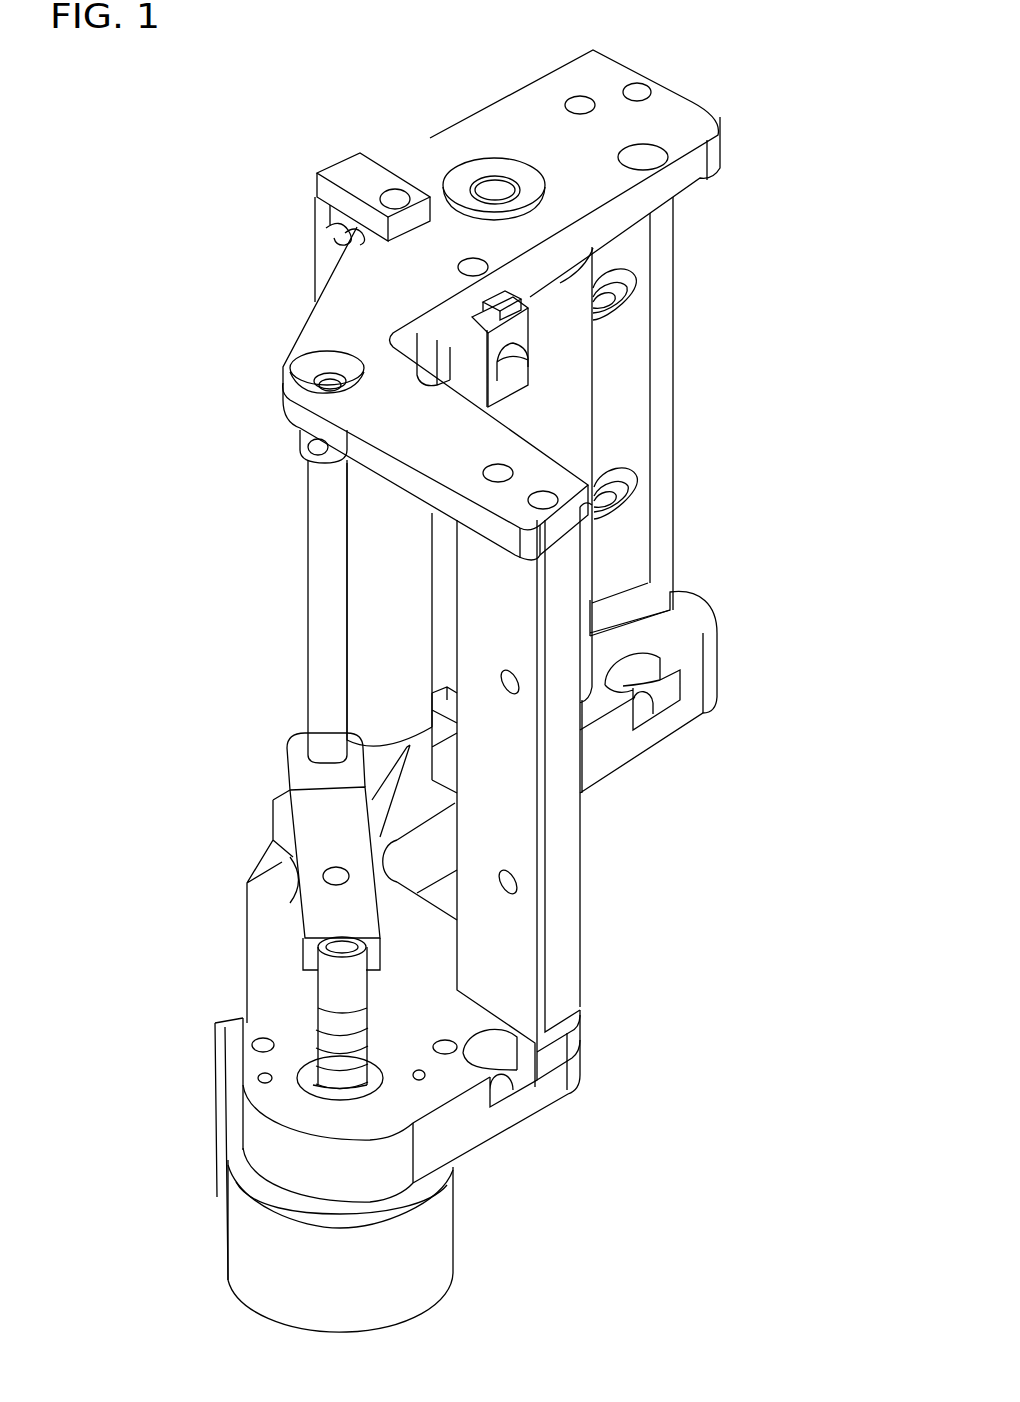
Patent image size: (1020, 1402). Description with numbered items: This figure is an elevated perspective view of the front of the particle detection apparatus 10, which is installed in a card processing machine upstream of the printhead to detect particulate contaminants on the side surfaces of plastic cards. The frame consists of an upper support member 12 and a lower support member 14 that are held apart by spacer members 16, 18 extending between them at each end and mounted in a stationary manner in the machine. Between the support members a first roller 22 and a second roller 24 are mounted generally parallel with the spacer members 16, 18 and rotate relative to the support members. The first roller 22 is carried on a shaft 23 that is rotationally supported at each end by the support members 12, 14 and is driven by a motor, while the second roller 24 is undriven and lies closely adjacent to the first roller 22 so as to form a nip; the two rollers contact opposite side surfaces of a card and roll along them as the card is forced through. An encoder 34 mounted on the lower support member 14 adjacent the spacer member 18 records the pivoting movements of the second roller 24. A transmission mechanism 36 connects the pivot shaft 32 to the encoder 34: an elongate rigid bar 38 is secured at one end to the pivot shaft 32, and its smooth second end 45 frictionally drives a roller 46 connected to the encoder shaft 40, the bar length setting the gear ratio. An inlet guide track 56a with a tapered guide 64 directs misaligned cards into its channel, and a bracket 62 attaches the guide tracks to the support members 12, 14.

The particle detection apparatus 10 is at (210, 312).
The upper support member 12 is at (670, 108).
The lower support member 14 is at (682, 628).
The spacer member 16 is at (630, 390).
The spacer member 18 is at (560, 830).
The first roller 22 is at (577, 285).
The shaft 23 is at (495, 195).
The second roller 24 is at (367, 490).
The pivot shaft 32 is at (323, 582).
The encoder 34 is at (262, 1253).
The transmission mechanism 36 is at (270, 775).
The bar 38 is at (313, 820).
The encoder shaft 40 is at (330, 1070).
The smooth second end 45 is at (313, 953).
The roller 46 is at (357, 973).
The inlet guide track 56a is at (515, 332).
The bracket 62 is at (348, 173).
The tapered guide 64 is at (508, 383).